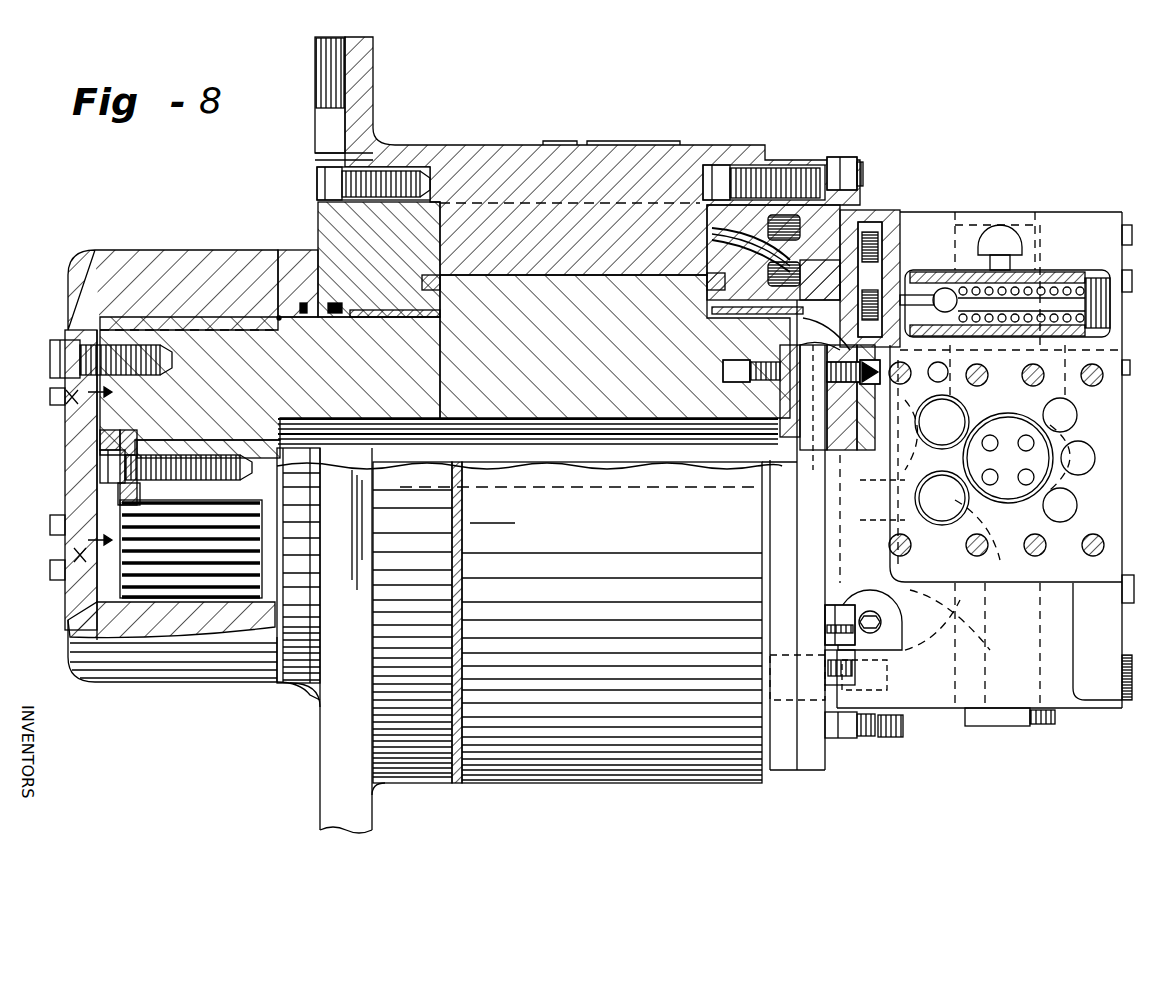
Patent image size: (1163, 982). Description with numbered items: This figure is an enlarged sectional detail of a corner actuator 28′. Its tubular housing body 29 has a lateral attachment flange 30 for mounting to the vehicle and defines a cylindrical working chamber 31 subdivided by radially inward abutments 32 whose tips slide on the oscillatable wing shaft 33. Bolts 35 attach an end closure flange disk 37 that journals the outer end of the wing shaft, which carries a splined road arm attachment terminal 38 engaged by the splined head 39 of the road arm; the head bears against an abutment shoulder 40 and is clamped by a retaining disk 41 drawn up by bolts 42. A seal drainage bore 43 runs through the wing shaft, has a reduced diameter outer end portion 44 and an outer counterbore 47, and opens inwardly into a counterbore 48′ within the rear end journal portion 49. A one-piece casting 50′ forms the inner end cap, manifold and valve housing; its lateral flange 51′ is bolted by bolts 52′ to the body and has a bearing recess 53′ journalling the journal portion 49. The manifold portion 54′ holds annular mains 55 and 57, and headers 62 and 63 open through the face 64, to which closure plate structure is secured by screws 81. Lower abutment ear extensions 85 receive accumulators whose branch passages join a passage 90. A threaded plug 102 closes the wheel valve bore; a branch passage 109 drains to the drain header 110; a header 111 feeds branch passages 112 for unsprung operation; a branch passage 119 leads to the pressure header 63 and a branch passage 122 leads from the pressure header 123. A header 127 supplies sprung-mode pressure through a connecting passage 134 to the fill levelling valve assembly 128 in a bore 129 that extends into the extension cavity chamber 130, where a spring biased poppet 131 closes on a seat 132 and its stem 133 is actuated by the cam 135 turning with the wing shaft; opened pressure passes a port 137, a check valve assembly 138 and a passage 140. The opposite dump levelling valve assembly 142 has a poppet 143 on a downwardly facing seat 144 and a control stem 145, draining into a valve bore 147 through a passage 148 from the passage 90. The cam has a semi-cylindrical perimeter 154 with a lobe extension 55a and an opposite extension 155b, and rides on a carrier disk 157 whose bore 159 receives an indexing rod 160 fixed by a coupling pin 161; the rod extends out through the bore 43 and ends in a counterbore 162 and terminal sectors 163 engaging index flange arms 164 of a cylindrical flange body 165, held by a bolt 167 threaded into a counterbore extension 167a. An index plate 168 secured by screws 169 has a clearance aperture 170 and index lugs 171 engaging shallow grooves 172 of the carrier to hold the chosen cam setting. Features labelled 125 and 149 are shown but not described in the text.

The corner actuator 28′ is at (838, 143).
The housing body 29 is at (513, 152).
The lateral attachment flange 30 is at (372, 72).
The working chamber 31 is at (530, 212).
The abutments 32 is at (560, 272).
The wing shaft 33 is at (598, 352).
The bolts 35 is at (318, 182).
The end closure flange disk 37 is at (328, 232).
The road arm attachment projection terminal 38 is at (236, 582).
The road arm attachment head 39 is at (180, 252).
The abutment shoulder 40 is at (277, 298).
The retaining disk 41 is at (58, 397).
The bolts 42 is at (50, 358).
The bore 43 is at (445, 420).
The reduced diameter outer end portion 44 is at (248, 452).
The counterbore 47 is at (128, 448).
The counterbore 48′ is at (760, 403).
The rear end journal portion 49 is at (775, 300).
The one-piece casting 50′ is at (925, 265).
The lateral flange 51′ is at (792, 148).
The bolts 52′ is at (850, 176).
The bearing recess 53′ is at (790, 318).
The manifold portion 54′ is at (706, 226).
The annular main 55 is at (713, 239).
The cam lobe extension 55a is at (832, 352).
The annular main 57 is at (784, 239).
The header 62 is at (950, 436).
The pressure header 63 is at (950, 512).
The side face 64 is at (1118, 437).
The screws 81 is at (1100, 545).
The lower abutment ear extensions 85 is at (1086, 665).
The passage 90 is at (1057, 600).
The threaded plug 102 is at (1020, 472).
The connecting branch passage 109 is at (985, 412).
The drain header 110 is at (1073, 418).
The header 111 is at (1083, 470).
The branch connecting passages 112 is at (1077, 505).
The connecting branch passage 119 is at (960, 470).
The connecting branch passage 122 is at (1009, 605).
The hydraulic pressure header 123 is at (1060, 548).
The bolt hole 125 is at (1088, 365).
The header 127 is at (946, 378).
The fill levelling valve assembly 128 is at (905, 210).
The bore 129 is at (838, 258).
The extension cavity chamber 130 is at (945, 288).
The spring biased poppet 131 is at (846, 288).
The seat 132 is at (900, 262).
The actuating and guide stem 133 is at (915, 270).
The connecting passage 134 is at (903, 250).
The cam 135 is at (830, 335).
The port 137 is at (1004, 340).
The check valve assembly 138 is at (1070, 270).
The passage 140 is at (1020, 332).
The dump levelling valve assembly 142 is at (876, 738).
The poppet 143 is at (825, 690).
The seat 144 is at (895, 668).
The control stem 145 is at (828, 620).
The valve bore 147 is at (903, 712).
The passage 148 is at (960, 650).
The passage 149 is at (975, 620).
The semi-cylindrical perimeter 154 is at (790, 370).
The lobe end extension 155b is at (835, 592).
The carrier disk 157 is at (700, 440).
The bore 159 is at (800, 470).
The indexing rod 160 is at (532, 460).
The coupling pin 161 is at (820, 455).
The counterbore 162 is at (229, 395).
The terminal sectors 163 is at (120, 486).
The index flange arms 164 is at (105, 443).
The cylindrical flange body 165 is at (150, 452).
The bolt 167 is at (105, 468).
The counterbore extension 167a is at (218, 450).
The index plate 168 is at (722, 372).
The screws 169 is at (760, 392).
The axial clearance aperture 170 is at (837, 452).
The index lugs 171 is at (788, 402).
The shallow grooves 172 is at (785, 458).